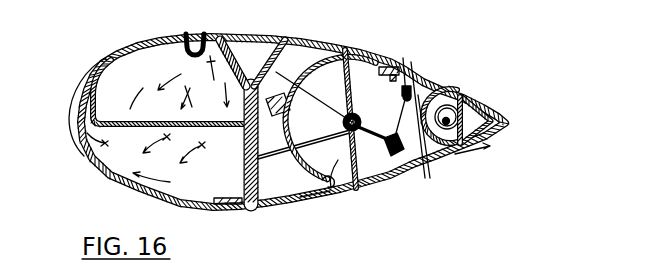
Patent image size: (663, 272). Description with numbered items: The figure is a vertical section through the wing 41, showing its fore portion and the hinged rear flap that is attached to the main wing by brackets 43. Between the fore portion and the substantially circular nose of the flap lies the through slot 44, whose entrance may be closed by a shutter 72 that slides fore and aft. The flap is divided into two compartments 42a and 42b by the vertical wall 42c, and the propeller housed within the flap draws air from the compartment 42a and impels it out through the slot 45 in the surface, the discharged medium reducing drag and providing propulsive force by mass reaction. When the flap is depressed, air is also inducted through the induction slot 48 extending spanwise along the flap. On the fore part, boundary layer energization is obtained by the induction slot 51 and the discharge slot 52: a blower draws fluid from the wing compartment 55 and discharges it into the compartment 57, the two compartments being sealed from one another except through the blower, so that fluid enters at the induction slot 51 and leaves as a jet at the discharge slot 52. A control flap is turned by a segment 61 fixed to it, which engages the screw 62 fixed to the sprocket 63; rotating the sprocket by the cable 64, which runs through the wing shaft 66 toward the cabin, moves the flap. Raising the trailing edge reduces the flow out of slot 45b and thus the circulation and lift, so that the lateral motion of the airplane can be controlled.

The wing 41 is at (147, 43).
The compartment 42a is at (326, 78).
The compartment 42b is at (376, 163).
The vertical wall 42c is at (381, 66).
The brackets 43 is at (273, 160).
The through slot 44 is at (299, 60).
The slot 45 is at (460, 97).
The slot 45b is at (463, 97).
The induction slot 48 is at (333, 194).
The induction slot 51 is at (208, 34).
The discharge slot 52 is at (84, 85).
The wing compartment 55 is at (155, 83).
The compartment 57 is at (217, 191).
The segment 61 is at (431, 160).
The screw 62 is at (403, 58).
The sprocket 63 is at (396, 152).
The cable 64 is at (365, 129).
The wing shaft 66 is at (353, 112).
The shutter 72 is at (216, 210).